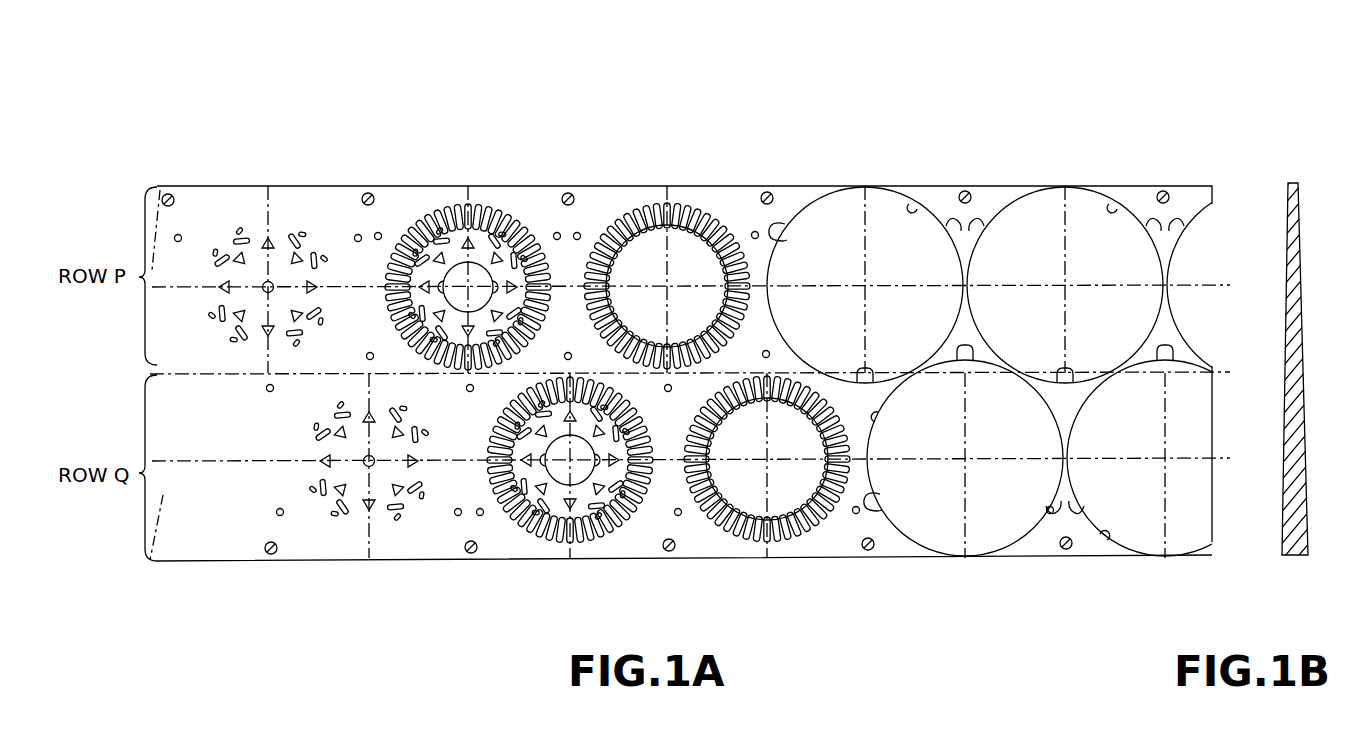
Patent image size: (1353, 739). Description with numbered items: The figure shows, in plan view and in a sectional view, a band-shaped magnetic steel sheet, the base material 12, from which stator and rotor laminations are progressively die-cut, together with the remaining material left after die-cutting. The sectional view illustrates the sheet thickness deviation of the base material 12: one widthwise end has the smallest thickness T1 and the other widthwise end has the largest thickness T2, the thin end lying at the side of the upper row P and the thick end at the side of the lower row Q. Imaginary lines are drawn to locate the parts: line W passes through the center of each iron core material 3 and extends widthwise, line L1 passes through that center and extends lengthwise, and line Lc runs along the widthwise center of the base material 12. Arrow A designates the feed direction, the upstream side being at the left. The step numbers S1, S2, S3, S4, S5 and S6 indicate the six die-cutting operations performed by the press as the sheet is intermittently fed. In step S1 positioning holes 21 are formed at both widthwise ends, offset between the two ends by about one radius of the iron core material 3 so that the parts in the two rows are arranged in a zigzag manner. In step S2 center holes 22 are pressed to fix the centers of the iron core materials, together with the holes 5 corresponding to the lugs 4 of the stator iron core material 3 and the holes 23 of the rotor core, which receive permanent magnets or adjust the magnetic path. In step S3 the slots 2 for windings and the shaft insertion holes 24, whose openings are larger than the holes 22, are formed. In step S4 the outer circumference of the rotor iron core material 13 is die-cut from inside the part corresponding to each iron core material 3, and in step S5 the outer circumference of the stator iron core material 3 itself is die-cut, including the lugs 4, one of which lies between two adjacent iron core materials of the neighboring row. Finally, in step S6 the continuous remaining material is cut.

In FIG. 1A, the slots 2 is at (546, 388).
In FIG. 1A, the iron core material 3 is at (429, 212).
In FIG. 1A, the lugs 4 is at (784, 234).
In FIG. 1A, the holes 5 is at (176, 242).
In FIG. 1A, the base material to be machined 12 is at (998, 186).
In FIG. 1A, the iron core material of rotor core 13 is at (394, 316).
In FIG. 1A, the holes 21 is at (169, 193).
In FIG. 1A, the holes 22 is at (273, 289).
In FIG. 1A, the holes 23 is at (243, 246).
In FIG. 1A, the shaft insertion holes 24 is at (502, 194).
In FIG. 1A, the imaginary line W is at (268, 186).
In FIG. 1A, the imaginary line L1 is at (1212, 276).
In FIG. 1A, the imaginary line Lc is at (1212, 380).
In FIG. 1A, the step S1 is at (254, 115).
In FIG. 1A, the step S2 is at (459, 52).
In FIG. 1A, the step S3 is at (367, 111).
In FIG. 1A, the step S4 is at (562, 48).
In FIG. 1A, the step S5 is at (767, 111).
In FIG. 1A, the step S6 is at (1185, 48).
In FIG. 1B, the smallest widthwise thickness T1 is at (1306, 151).
In FIG. 1B, the largest widthwise thickness T2 is at (1316, 605).
In FIG. 1A, the arrow A is at (987, 622).